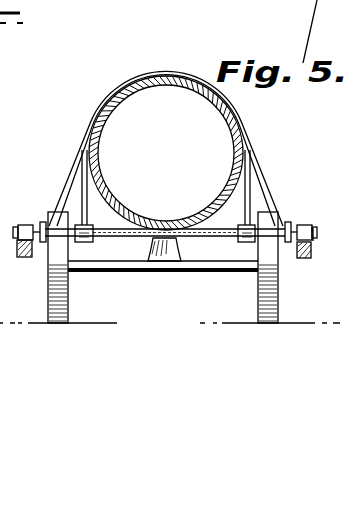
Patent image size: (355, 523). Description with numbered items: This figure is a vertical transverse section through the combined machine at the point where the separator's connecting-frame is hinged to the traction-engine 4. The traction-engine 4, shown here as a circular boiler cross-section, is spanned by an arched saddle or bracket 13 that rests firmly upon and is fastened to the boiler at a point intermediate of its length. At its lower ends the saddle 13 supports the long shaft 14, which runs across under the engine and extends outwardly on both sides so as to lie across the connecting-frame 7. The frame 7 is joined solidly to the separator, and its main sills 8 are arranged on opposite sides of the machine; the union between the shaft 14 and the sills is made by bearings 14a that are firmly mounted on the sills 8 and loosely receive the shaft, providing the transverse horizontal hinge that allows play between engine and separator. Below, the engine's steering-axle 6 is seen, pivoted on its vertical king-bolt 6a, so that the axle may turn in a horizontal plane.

The traction-engine 4 is at (166, 153).
The saddle or bracket 13 is at (251, 186).
The long shaft 14 is at (56, 222).
The bearings 14a is at (25, 225).
The main sills 8 is at (17, 256).
The frame 7 is at (315, 243).
The steering-axle 6 is at (128, 273).
The king-bolt 6a is at (168, 276).